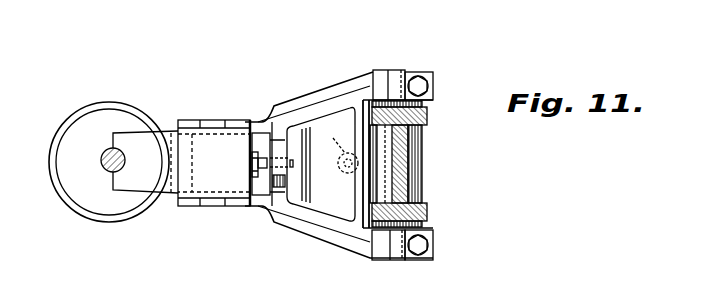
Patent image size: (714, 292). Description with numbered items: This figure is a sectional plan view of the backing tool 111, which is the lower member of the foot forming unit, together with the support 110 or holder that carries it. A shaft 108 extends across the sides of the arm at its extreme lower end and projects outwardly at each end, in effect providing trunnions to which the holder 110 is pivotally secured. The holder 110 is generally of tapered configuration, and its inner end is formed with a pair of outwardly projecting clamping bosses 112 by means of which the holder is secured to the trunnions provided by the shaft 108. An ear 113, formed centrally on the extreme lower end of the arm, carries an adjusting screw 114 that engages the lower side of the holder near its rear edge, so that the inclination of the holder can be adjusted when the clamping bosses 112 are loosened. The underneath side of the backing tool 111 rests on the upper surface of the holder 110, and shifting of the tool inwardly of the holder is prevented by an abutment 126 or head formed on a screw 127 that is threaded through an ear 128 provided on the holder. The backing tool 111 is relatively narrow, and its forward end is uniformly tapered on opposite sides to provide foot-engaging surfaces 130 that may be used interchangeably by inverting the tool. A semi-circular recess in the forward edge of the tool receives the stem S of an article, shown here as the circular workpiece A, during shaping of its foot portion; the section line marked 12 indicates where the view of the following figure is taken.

The wheel A is at (62, 188).
The stem S is at (104, 165).
The foot-engaging surfaces 130 is at (116, 180).
The backing tool 111 is at (171, 137).
The section line 12 is at (225, 94).
The abutment 126 is at (253, 160).
The screw 127 is at (259, 166).
The support 110 is at (276, 105).
The adjusting screw 114 is at (335, 203).
The ear 113 is at (382, 133).
The shaft 108 is at (396, 70).
The clamping bosses 112 is at (434, 73).
The ear 128 is at (380, 192).